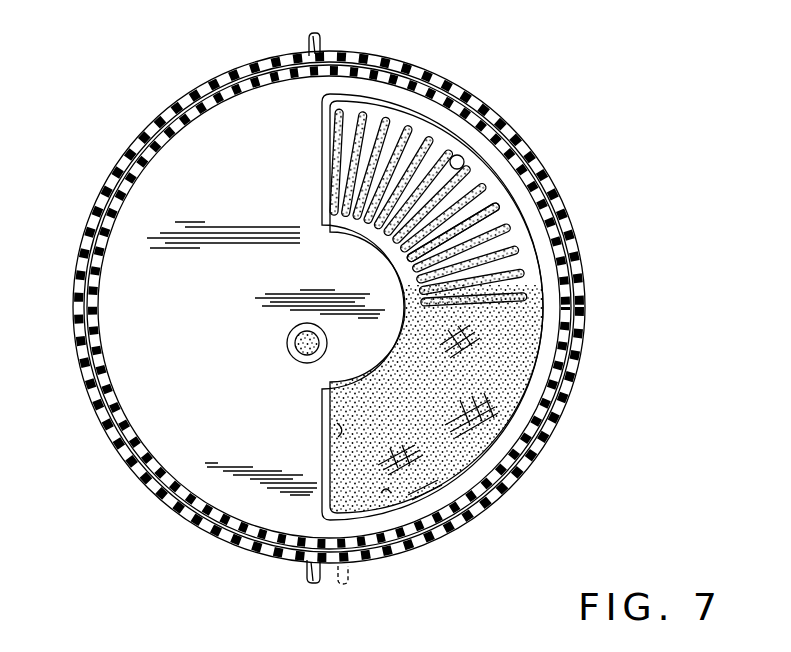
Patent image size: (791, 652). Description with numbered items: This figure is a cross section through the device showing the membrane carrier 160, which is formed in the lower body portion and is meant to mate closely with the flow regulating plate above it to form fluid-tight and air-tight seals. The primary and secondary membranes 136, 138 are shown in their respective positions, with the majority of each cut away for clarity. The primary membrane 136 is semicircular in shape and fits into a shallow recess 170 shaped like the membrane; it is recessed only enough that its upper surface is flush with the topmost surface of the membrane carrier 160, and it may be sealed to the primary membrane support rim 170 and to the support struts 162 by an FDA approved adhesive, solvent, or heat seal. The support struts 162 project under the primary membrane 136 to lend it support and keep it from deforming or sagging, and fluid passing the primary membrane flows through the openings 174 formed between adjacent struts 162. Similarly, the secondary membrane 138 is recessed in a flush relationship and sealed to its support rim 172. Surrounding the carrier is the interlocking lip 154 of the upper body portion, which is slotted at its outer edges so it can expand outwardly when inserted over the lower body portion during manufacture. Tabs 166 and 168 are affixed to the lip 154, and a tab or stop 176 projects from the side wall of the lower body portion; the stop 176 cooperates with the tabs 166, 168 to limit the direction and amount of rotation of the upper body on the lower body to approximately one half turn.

The primary membrane 136 is at (490, 388).
The secondary membrane 138 is at (307, 347).
The interlocking lip 154 is at (418, 71).
The membrane carrier 160 is at (213, 309).
The support struts 162 is at (377, 163).
The tab 166 is at (310, 39).
The tab 168 is at (305, 573).
The shallow recess 170 is at (460, 155).
The support rim 172 is at (287, 343).
The openings 174 is at (490, 218).
The tab or stop 176 is at (349, 581).